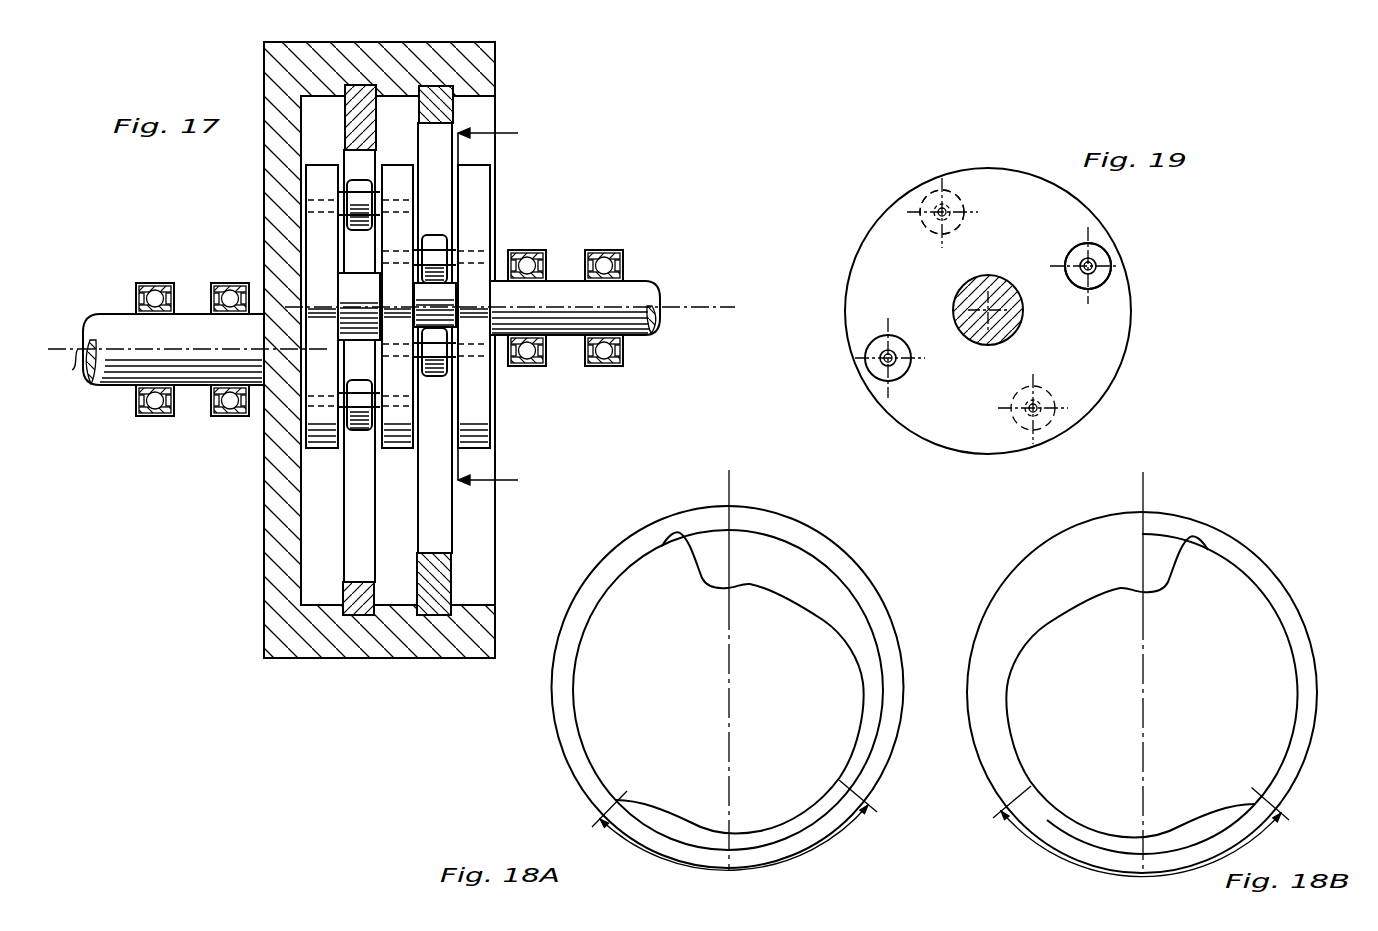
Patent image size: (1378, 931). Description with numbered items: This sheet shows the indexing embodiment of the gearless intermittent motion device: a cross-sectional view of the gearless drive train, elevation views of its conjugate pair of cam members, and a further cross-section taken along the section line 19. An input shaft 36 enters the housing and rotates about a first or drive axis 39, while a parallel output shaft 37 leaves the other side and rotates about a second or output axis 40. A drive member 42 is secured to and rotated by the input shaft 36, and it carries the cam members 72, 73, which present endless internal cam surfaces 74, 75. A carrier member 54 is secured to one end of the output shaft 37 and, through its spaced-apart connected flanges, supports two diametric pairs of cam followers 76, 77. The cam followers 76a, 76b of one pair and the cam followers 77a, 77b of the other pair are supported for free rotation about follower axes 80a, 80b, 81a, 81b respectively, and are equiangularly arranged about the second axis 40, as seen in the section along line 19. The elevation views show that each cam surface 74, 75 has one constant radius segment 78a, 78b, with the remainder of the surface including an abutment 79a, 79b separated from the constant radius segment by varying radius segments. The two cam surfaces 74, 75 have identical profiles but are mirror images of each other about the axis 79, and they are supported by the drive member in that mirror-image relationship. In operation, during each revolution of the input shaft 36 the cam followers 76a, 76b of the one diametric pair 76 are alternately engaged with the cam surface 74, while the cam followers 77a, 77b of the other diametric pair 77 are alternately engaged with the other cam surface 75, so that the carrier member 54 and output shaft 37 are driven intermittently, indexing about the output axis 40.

In FIG. 17, the section line 19- 19 is at (508, 314).
In FIG. 17, the input shaft 36 is at (104, 384).
In FIG. 17, the output shaft 37 is at (641, 335).
In FIG. 17, the first or drive axis 39 is at (189, 365).
In FIG. 17, the second or output axis 40 is at (688, 308).
In FIG. 19, the second or output axis 40 is at (987, 310).
In FIG. 17, the drive member 42 is at (263, 549).
In FIG. 17, the carrier member 54 is at (495, 458).
In FIG. 19, the carrier member 54 is at (1108, 396).
In FIG. 17, the cam member 72 is at (435, 86).
In FIG. 18A, the cam member 72 is at (792, 512).
In FIG. 17, the cam member 73 is at (361, 85).
In FIG. 18B, the cam member 73 is at (1217, 516).
In FIG. 17, the cam surface 74 is at (433, 553).
In FIG. 18A, the cam surface 74 is at (577, 667).
In FIG. 17, the cam surface 75 is at (357, 582).
In FIG. 18B, the cam surface 75 is at (1292, 682).
In FIG. 19, the diametric pair of cam followers 76 is at (1118, 228).
In FIG. 17, the cam follower 76a is at (453, 243).
In FIG. 19, the cam follower 76a is at (1111, 264).
In FIG. 17, the cam follower 76b is at (456, 346).
In FIG. 19, the cam follower 76b is at (866, 366).
In FIG. 19, the diametric pair of cam followers 77 is at (885, 197).
In FIG. 17, the cam follower 77a is at (347, 189).
In FIG. 19, the cam follower 77a is at (933, 181).
In FIG. 17, the cam follower 77b is at (345, 392).
In FIG. 19, the cam follower 77b is at (1051, 428).
In FIG. 18A, the constant radius segment 78a is at (655, 855).
In FIG. 18B, the constant radius segment 78b is at (1065, 858).
In FIG. 18A, the axis 79 is at (730, 494).
In FIG. 18B, the axis 79 is at (1146, 494).
In FIG. 18A, the abutment 79a is at (695, 561).
In FIG. 18B, the abutment 79b is at (1176, 562).
In FIG. 17, the follower axis 80a is at (450, 246).
In FIG. 19, the follower axis 80a is at (1084, 262).
In FIG. 17, the follower axis 80b is at (448, 370).
In FIG. 19, the follower axis 80b is at (894, 361).
In FIG. 17, the follower axis 81a is at (334, 203).
In FIG. 19, the follower axis 81a is at (944, 209).
In FIG. 17, the follower axis 81b is at (336, 416).
In FIG. 19, the follower axis 81b is at (1036, 404).